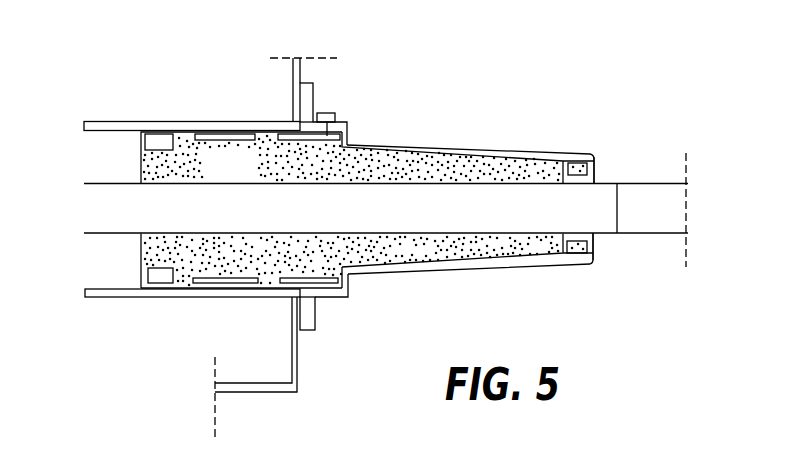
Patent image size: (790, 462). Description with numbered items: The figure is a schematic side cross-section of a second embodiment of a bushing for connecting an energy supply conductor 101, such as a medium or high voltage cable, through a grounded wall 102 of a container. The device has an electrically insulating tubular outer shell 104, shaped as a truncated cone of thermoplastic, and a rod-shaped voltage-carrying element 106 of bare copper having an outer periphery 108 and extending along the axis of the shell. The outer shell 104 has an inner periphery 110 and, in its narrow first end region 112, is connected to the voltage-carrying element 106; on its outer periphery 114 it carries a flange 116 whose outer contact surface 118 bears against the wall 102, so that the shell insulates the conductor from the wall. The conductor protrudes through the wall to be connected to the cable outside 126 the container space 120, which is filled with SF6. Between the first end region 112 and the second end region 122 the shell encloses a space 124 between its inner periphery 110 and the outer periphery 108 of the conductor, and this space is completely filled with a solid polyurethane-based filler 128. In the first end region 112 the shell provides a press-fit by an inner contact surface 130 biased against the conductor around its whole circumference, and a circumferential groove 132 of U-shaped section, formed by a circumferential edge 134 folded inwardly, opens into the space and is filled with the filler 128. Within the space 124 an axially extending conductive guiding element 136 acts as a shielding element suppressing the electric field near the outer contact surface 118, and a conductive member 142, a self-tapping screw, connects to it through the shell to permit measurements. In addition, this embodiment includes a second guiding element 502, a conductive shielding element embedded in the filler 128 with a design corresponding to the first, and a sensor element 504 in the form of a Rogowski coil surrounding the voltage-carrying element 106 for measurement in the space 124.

The energy supply conductor 101 is at (650, 195).
The wall 102 is at (299, 76).
The outer shell 104 is at (384, 146).
The voltage-carrying element 106 is at (148, 217).
The outer periphery 108 is at (111, 183).
The inner periphery 110 is at (98, 282).
The first end region 112 is at (592, 136).
The outer periphery 114 is at (440, 148).
The flange 116 is at (306, 97).
The outer contact surface 118 is at (288, 116).
The container space 120 is at (199, 346).
The second end region 122 is at (88, 90).
The space 124 is at (252, 176).
The outside 126 is at (527, 321).
The filler 128 is at (137, 276).
The inner contact surface 130 is at (581, 233).
The circumferential groove 132 is at (598, 160).
The circumferential edge 134 is at (580, 164).
The guiding element 136 is at (346, 283).
The conductive member 142 is at (328, 114).
The second guiding element 502 is at (217, 137).
The sensor element 504 is at (160, 143).